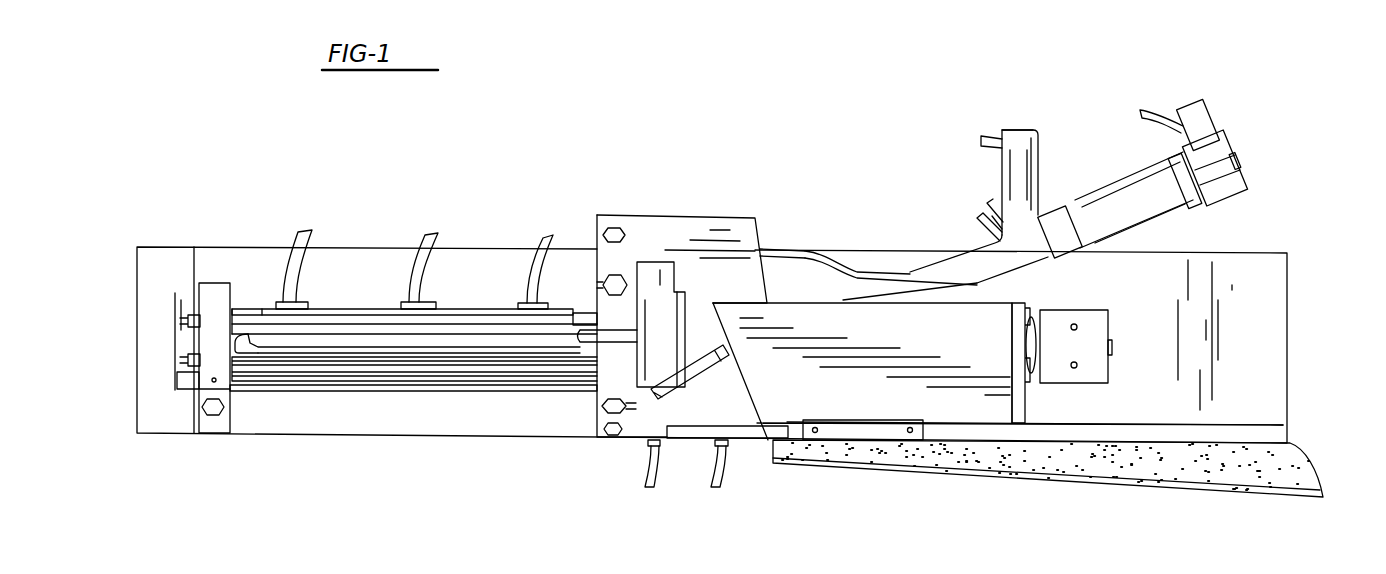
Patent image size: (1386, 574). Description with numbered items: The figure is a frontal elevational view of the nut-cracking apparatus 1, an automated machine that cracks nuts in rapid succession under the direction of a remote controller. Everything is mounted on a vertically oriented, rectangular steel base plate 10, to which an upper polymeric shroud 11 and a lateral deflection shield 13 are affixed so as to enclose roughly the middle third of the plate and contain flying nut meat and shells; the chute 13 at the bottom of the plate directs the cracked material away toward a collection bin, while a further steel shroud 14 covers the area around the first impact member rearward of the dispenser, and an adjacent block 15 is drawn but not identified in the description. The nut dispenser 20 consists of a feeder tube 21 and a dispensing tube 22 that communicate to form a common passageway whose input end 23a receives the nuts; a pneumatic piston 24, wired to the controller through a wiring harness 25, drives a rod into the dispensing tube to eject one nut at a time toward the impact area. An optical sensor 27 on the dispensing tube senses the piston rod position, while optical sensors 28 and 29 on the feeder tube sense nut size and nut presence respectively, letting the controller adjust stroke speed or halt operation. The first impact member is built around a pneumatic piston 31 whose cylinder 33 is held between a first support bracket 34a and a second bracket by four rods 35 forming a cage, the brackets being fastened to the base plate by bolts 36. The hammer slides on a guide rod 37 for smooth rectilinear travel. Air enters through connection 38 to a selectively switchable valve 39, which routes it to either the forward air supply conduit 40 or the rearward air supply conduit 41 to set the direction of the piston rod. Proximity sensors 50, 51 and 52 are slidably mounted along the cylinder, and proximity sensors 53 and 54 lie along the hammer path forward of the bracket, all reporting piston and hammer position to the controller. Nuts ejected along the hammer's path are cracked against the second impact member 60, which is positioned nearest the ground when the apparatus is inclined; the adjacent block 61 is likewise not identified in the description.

The nut-cracking apparatus 1 is at (750, 135).
The base plate 10 is at (180, 250).
The upper polymeric shroud 11 is at (813, 255).
The lateral deflection shield / polymeric chute 13 is at (1035, 482).
The shroud 14 is at (867, 400).
The support block 15 is at (672, 226).
The nut dispenser 20 is at (1073, 126).
The feeder tube 21 is at (1002, 172).
The dispensing tube 22 is at (918, 270).
The input end 23a is at (1022, 128).
The pneumatic piston 24 is at (1155, 205).
The wiring harness 25 is at (1155, 112).
The optical sensor 27 is at (985, 230).
The optical sensor 28 is at (992, 206).
The optical sensor 29 is at (985, 138).
The pneumatic piston 31 is at (344, 306).
The cylinder 33 is at (470, 335).
The first support bracket 34a is at (208, 433).
The rods 35 is at (265, 308).
The bolts 36 is at (206, 412).
The guide rod 37 is at (440, 392).
The connection 38 is at (693, 372).
The selectively switchable valve 39 is at (650, 297).
The forward air supply conduit 40 is at (320, 352).
The rearward air supply conduit 41 is at (590, 340).
The proximity sensor 50 is at (303, 235).
The proximity sensor 51 is at (422, 238).
The proximity sensor 52 is at (548, 242).
The proximity sensor 53 is at (640, 458).
The proximity sensor 54 is at (730, 447).
The second impact member 60 is at (1072, 388).
The drive block 61 is at (1098, 335).